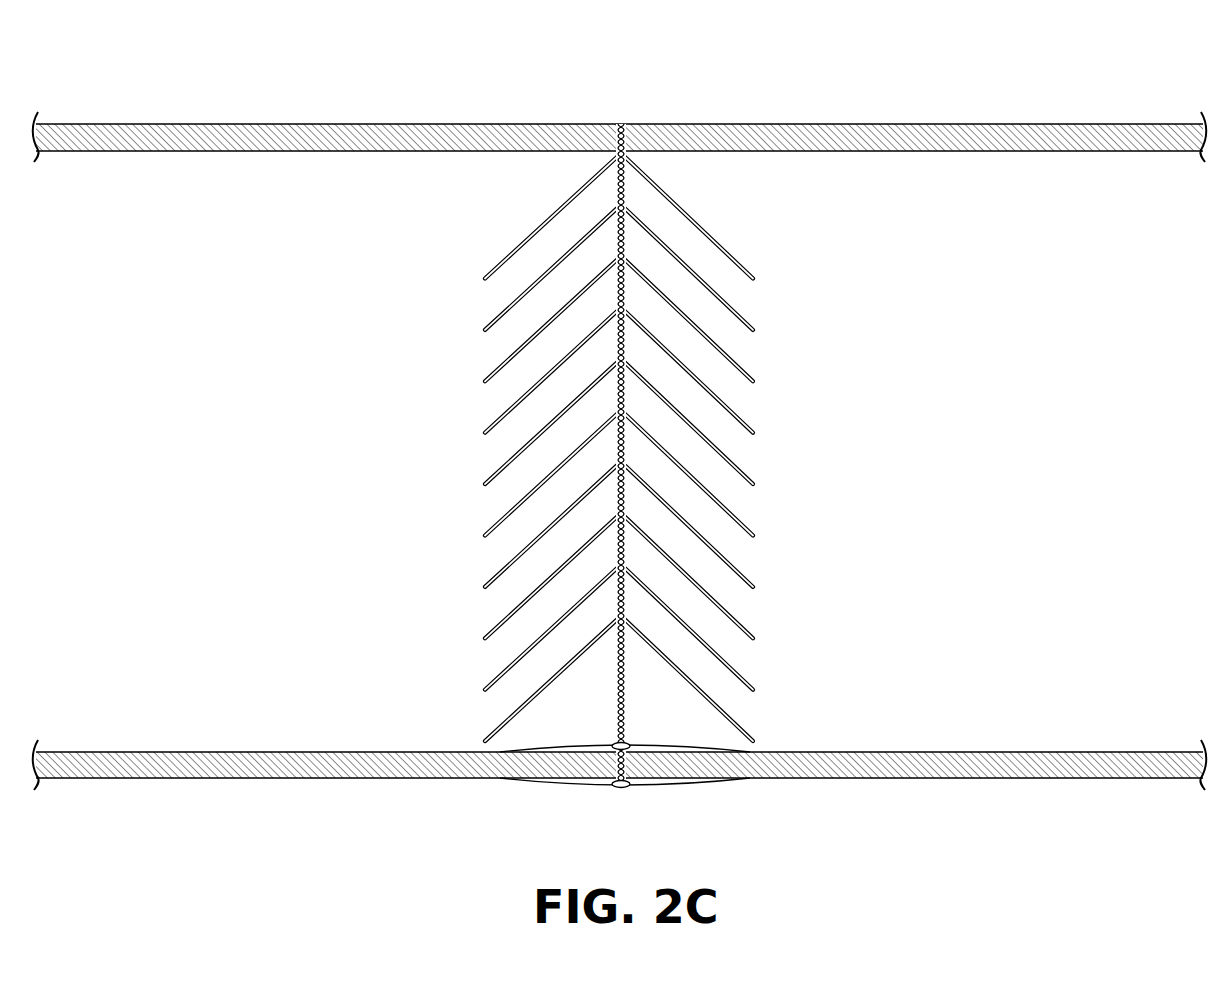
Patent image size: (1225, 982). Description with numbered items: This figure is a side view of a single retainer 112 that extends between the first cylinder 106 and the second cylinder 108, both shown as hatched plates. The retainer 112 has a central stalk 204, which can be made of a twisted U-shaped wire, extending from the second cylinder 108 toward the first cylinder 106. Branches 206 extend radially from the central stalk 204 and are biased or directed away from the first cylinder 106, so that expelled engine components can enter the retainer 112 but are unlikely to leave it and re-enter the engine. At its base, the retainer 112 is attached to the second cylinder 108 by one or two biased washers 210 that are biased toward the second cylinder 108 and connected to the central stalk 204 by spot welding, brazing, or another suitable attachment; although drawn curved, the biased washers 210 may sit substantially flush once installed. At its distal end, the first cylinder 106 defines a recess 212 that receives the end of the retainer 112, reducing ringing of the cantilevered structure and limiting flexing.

The retainer 112 is at (1108, 41).
The first cylinder 106 is at (620, 114).
The second cylinder 108 is at (620, 742).
The branches 206 is at (696, 449).
The central stalk 204 is at (728, 456).
The recess 212 is at (608, 106).
The biased washers 210 is at (636, 797).